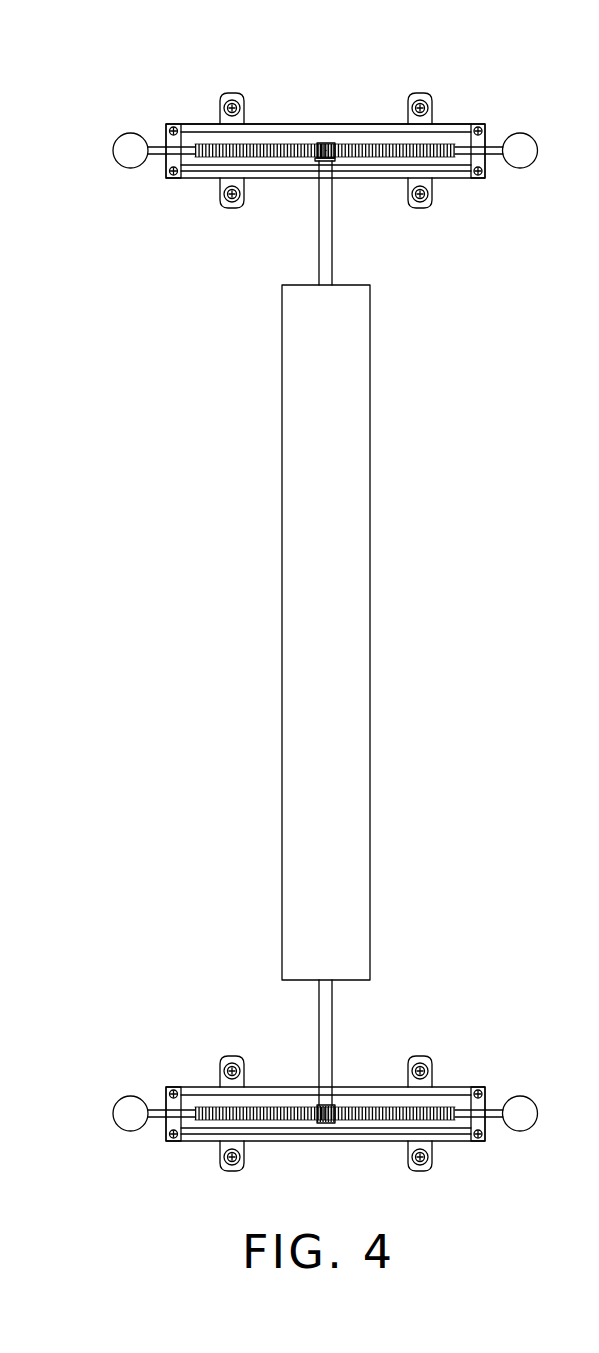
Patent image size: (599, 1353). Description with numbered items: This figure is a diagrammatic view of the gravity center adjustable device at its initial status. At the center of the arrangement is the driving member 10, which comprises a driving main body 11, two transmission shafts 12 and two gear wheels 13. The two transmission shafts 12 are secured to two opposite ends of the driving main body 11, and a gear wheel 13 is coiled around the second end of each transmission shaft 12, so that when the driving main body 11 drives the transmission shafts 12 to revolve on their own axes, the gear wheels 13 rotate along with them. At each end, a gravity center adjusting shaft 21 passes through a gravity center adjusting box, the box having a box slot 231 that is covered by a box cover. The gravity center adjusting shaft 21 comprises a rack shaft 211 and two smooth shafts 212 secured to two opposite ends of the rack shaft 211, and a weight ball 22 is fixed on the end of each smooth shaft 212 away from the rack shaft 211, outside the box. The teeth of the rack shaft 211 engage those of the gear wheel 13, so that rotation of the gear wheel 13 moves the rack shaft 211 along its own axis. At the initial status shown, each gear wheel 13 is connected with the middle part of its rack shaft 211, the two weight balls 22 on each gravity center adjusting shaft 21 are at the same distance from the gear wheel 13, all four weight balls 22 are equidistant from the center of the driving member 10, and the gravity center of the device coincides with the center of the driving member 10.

The driving member 10 is at (487, 222).
The driving main body 11 is at (348, 363).
The transmission shaft 12 is at (325, 245).
The gear wheel 13 is at (332, 160).
The gravity center adjusting shaft 21 is at (199, 12).
The rack shaft 211 is at (285, 145).
The smooth shaft 212 is at (187, 151).
The weight ball 22 is at (130, 160).
The box slot 231 is at (453, 134).